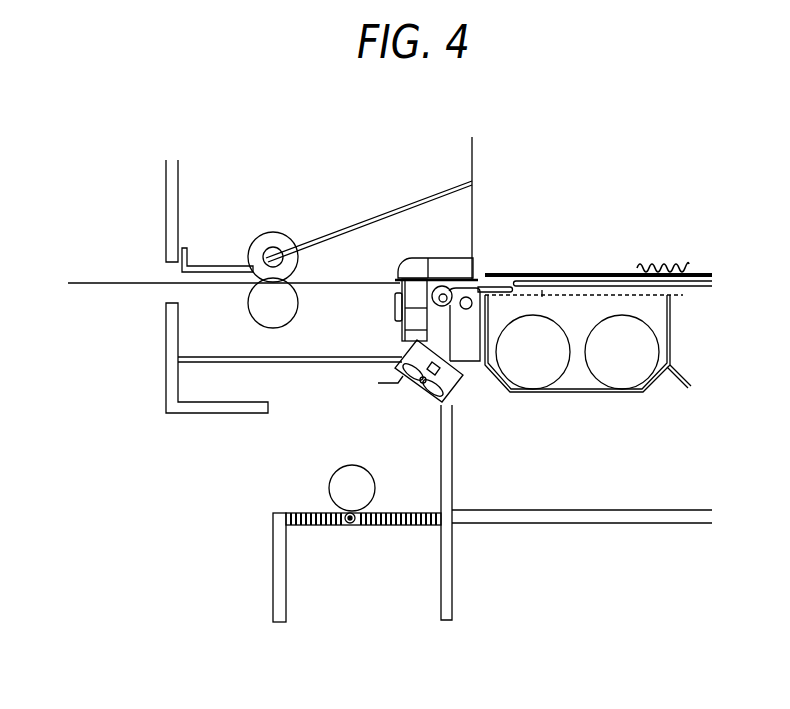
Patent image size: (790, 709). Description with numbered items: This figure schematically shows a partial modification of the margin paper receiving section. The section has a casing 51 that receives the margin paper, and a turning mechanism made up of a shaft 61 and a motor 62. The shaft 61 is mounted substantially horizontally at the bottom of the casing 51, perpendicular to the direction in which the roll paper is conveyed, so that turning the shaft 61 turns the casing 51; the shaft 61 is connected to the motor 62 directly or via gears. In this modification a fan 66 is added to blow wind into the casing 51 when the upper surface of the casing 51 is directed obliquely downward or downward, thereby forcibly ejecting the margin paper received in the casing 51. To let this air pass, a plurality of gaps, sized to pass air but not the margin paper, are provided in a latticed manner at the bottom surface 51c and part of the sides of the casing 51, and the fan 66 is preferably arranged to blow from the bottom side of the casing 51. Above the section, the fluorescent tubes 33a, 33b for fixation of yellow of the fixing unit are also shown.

The fluorescent tube for fixation of yellow 33a is at (620, 380).
The fluorescent tube for fixation of yellow 33b is at (537, 380).
The casing 51 is at (279, 622).
The bottom surface 51c is at (292, 512).
The shaft 61 is at (350, 526).
The motor 62 is at (345, 467).
The fan 66 is at (408, 377).